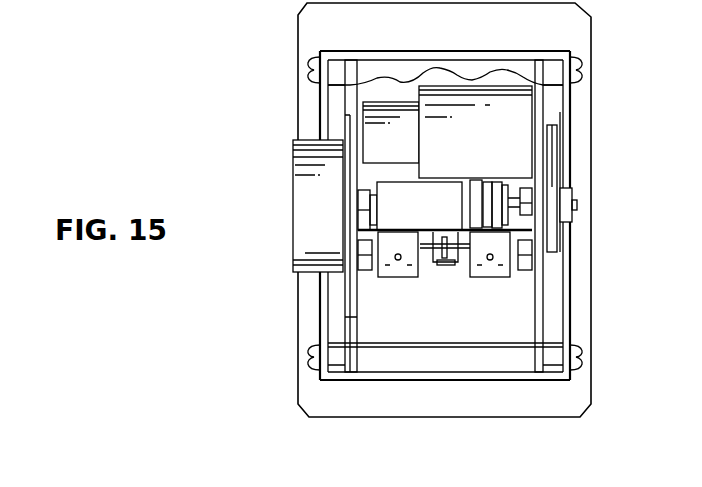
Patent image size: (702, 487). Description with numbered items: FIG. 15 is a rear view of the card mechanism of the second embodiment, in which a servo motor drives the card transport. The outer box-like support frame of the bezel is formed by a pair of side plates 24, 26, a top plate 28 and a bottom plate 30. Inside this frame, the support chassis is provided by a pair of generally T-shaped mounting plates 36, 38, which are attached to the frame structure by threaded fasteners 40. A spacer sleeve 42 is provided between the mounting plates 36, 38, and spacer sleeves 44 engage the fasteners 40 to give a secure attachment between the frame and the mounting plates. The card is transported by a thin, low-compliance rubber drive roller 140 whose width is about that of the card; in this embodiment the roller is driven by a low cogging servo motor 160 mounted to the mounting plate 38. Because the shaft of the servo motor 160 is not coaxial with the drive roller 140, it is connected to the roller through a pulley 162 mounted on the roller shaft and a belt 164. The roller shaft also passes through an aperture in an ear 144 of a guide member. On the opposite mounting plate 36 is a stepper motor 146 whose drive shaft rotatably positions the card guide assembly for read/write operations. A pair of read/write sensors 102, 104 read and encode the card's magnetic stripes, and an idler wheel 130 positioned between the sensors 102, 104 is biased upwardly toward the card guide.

The side plate 24 is at (319, 120).
The side plate 26 is at (572, 305).
The top plate 28 is at (405, 51).
The bottom plate 30 is at (475, 382).
The mounting plate 36 is at (347, 308).
The mounting plate 38 is at (538, 280).
The threaded fasteners 40 is at (318, 83).
The spacer sleeve 42 is at (475, 68).
The spacer sleeves 44 is at (337, 365).
The ear 144 is at (337, 67).
The read/write sensor 102 is at (392, 278).
The read/write sensor 104 is at (496, 278).
The idler wheel 130 is at (443, 263).
The drive roller 140 is at (400, 217).
The stepper motor 146 is at (302, 195).
The servo motor 160 is at (458, 143).
The pulley 162 is at (560, 238).
The belt 164 is at (552, 147).